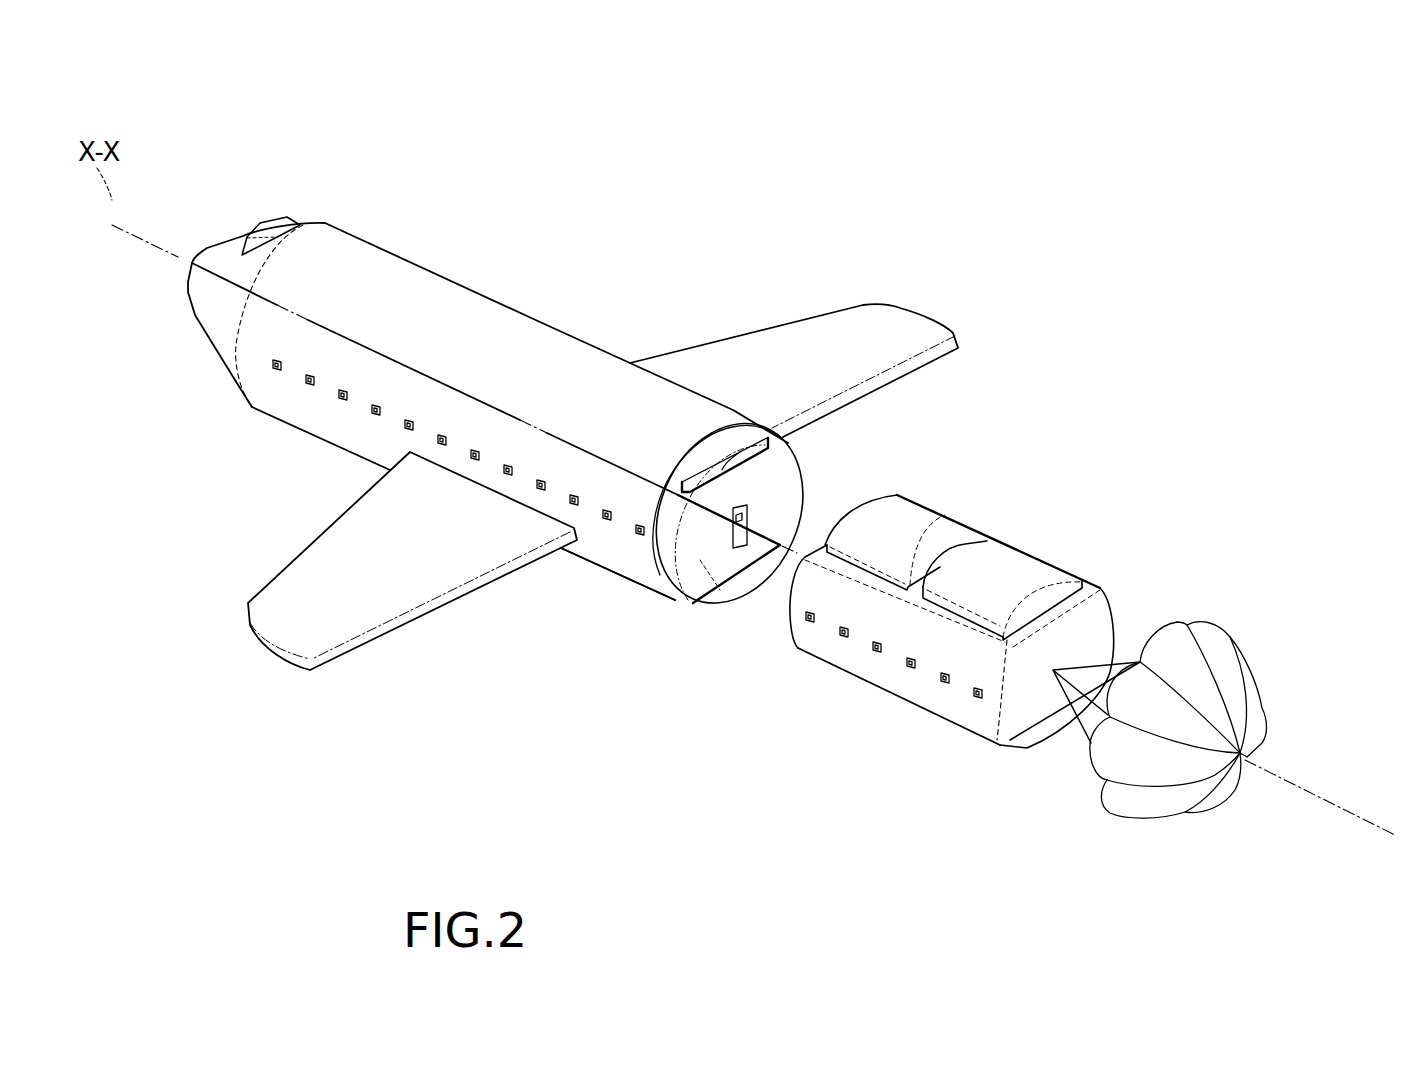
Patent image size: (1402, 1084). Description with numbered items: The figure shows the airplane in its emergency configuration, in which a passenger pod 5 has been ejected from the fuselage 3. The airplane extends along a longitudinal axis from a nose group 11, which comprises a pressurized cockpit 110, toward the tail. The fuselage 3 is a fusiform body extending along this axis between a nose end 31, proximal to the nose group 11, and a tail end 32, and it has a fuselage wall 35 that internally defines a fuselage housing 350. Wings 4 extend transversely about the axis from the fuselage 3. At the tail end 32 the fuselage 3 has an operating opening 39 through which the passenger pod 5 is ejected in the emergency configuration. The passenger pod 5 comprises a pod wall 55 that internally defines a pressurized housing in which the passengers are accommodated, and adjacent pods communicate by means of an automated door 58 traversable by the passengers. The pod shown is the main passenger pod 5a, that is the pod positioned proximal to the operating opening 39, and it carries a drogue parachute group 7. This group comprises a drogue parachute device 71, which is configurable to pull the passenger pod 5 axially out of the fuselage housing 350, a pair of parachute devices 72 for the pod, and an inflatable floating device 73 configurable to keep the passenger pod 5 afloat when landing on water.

The nose group 11 is at (190, 358).
The fuselage 3 is at (465, 245).
The nose end 31 is at (347, 222).
The pressurized cockpit 110 is at (262, 218).
The fuselage wall 35 is at (535, 370).
The tail end 32 is at (627, 594).
The wings 4 is at (920, 333).
The operating opening 39 is at (712, 430).
The fuselage housing 350 is at (680, 603).
The pod wall 55 is at (703, 563).
The inflatable floating device 73 is at (732, 590).
The automated door 58 is at (757, 514).
The parachute device 72 is at (740, 453).
The passenger pod 5 is at (812, 478).
The main passenger pod 5a is at (930, 727).
The drogue parachute group 7 is at (1181, 617).
The drogue parachute device 71 is at (1250, 652).